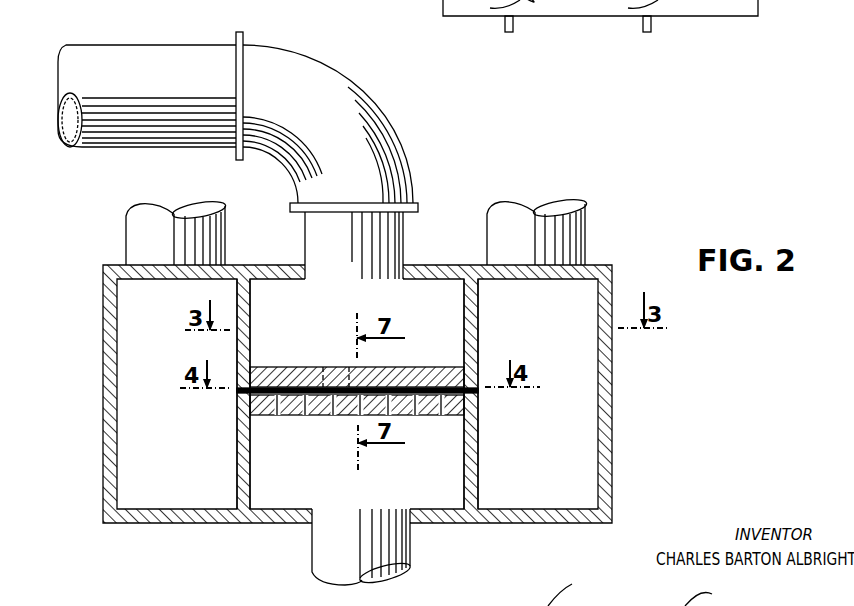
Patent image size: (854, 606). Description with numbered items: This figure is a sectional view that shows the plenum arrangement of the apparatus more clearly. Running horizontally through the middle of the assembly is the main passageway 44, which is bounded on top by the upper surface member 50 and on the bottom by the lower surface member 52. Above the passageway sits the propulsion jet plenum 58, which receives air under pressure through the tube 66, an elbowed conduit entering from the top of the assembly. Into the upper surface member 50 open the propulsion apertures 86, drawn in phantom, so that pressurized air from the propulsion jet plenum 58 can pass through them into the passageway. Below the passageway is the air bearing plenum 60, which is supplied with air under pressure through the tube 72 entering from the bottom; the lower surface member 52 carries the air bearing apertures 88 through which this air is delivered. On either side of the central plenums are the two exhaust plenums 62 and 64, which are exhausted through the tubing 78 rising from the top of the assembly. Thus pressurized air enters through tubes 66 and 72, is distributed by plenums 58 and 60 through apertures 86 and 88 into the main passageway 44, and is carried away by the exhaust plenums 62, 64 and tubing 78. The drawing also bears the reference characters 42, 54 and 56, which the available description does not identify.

The housing 42 is at (617, 448).
The main passageway 44 is at (435, 389).
The upper surface member 50 is at (272, 367).
The lower surface member 52 is at (437, 415).
The plate edge seals 54 is at (245, 391).
The partition walls 56 is at (245, 456).
The propulsion jet plenum 58 is at (427, 310).
The air bearing plenum 60 is at (405, 486).
The exhaust plenum 62 is at (162, 351).
The exhaust plenum 64 is at (577, 348).
The tube 66 is at (150, 45).
The tube 72 is at (312, 553).
The tubing 78 is at (126, 233).
The propulsion apertures 86 is at (350, 367).
The air bearing apertures 88 is at (330, 415).